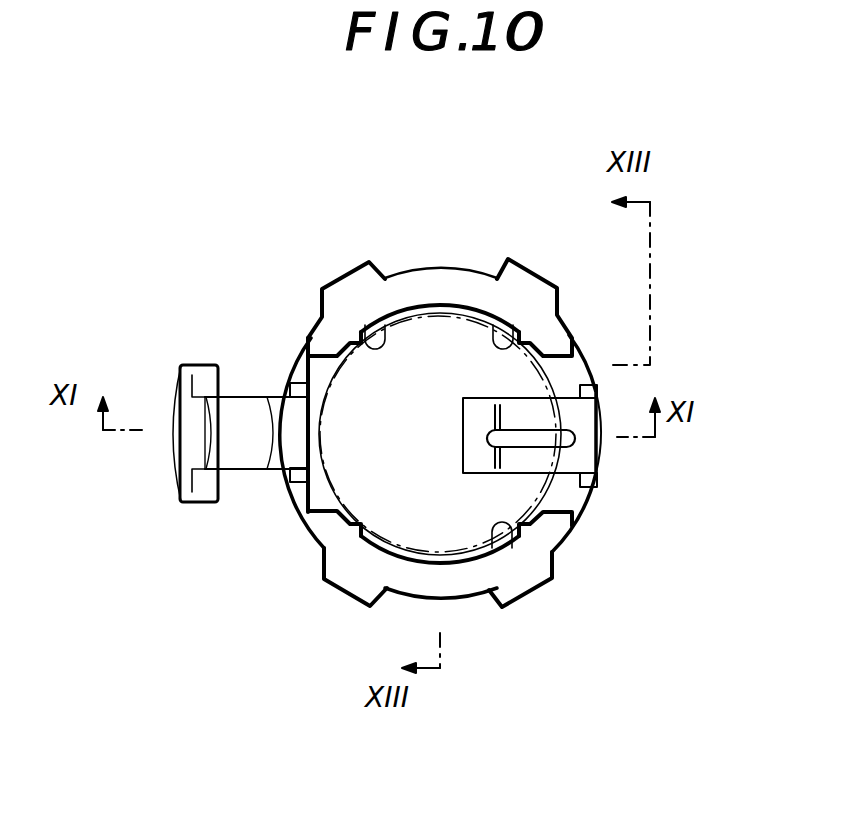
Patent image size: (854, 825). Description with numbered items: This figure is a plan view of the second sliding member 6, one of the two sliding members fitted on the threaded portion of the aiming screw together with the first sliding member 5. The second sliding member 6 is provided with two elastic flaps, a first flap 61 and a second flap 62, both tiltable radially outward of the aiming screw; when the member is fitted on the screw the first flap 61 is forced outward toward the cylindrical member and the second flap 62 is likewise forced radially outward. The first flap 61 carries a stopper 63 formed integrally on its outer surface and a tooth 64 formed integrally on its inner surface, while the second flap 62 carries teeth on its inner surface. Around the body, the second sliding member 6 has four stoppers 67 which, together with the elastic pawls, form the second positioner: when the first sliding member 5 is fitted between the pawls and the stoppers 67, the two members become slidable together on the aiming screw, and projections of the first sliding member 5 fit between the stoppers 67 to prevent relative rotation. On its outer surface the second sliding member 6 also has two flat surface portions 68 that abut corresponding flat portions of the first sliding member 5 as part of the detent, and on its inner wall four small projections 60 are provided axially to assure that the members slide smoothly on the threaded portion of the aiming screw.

The first sliding member 5 is at (469, 307).
The second sliding member 6 is at (440, 267).
The small projections 60 is at (383, 326).
The first flap 61 is at (183, 503).
The second flap 62 is at (582, 453).
The stopper 63 is at (172, 445).
The tooth 64 is at (213, 446).
The stoppers 67 is at (333, 278).
The flat surface portions 68 is at (600, 412).